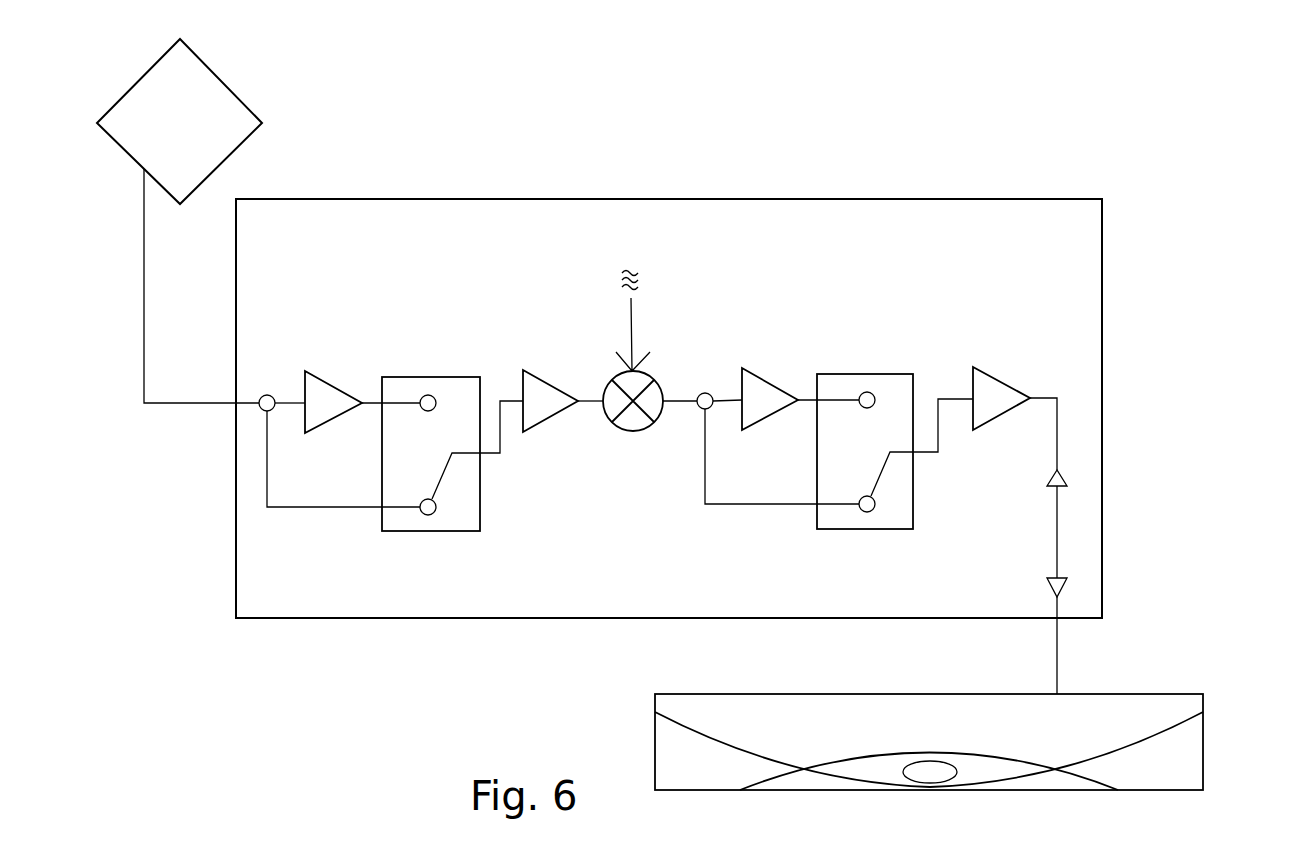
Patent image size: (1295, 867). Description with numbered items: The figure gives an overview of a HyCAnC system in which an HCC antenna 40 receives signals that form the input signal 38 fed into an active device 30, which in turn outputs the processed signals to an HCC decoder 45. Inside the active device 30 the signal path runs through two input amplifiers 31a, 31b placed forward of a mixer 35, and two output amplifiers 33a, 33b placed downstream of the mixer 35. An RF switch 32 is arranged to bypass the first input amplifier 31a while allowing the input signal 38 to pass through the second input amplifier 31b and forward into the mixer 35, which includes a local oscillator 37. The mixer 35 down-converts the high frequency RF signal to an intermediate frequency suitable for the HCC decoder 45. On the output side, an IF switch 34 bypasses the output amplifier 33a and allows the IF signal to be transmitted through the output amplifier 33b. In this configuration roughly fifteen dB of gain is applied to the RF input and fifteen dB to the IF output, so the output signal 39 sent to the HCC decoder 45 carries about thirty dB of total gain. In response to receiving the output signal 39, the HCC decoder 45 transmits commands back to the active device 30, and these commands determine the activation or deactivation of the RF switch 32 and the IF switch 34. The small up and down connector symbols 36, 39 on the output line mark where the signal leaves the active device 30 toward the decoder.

The active device 30 is at (1005, 198).
The first input amplifier 31a is at (322, 372).
The second input amplifier 31b is at (540, 372).
The RF switch 32 is at (450, 531).
The first output amplifier 33a is at (760, 383).
The second output amplifier 33b is at (1012, 380).
The IF switch 34 is at (823, 529).
The mixer 35 is at (623, 430).
The up connector 36 is at (1065, 477).
The local oscillator 37 is at (657, 227).
The input signal 38 is at (178, 518).
The output signal 39 is at (1063, 576).
The HCC antenna 40 is at (128, 86).
The HCC decoder 45 is at (1203, 748).